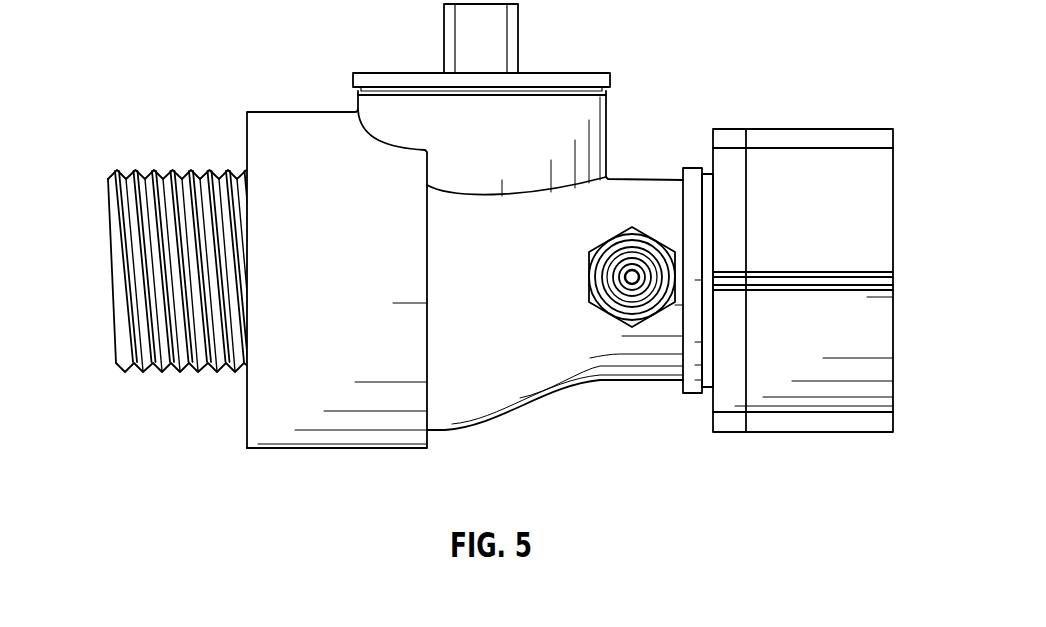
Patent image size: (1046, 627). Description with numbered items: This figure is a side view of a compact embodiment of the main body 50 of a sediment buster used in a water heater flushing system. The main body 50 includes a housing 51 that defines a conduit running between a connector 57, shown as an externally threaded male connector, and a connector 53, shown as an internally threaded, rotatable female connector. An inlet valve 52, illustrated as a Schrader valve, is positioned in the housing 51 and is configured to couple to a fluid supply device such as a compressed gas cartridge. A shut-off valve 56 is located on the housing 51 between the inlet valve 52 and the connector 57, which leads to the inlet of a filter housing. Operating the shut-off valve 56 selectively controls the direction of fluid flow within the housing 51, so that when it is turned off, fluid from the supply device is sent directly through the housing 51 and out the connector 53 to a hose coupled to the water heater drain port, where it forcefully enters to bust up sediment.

The main body 50 is at (155, 29).
The housing 51 is at (278, 130).
The inlet valve 52 is at (632, 227).
The connector 53 is at (873, 189).
The shut-off valve 56 is at (492, 51).
The connector 57 is at (122, 239).